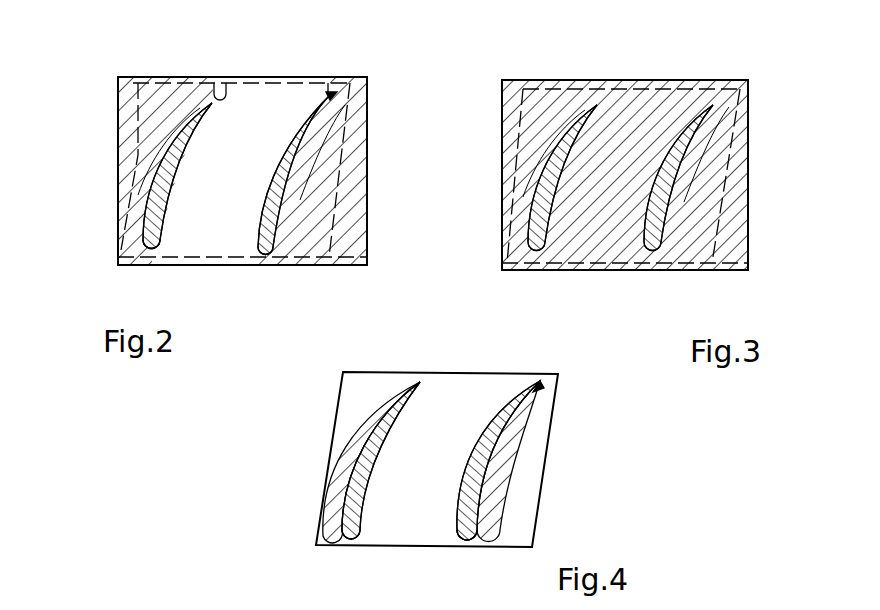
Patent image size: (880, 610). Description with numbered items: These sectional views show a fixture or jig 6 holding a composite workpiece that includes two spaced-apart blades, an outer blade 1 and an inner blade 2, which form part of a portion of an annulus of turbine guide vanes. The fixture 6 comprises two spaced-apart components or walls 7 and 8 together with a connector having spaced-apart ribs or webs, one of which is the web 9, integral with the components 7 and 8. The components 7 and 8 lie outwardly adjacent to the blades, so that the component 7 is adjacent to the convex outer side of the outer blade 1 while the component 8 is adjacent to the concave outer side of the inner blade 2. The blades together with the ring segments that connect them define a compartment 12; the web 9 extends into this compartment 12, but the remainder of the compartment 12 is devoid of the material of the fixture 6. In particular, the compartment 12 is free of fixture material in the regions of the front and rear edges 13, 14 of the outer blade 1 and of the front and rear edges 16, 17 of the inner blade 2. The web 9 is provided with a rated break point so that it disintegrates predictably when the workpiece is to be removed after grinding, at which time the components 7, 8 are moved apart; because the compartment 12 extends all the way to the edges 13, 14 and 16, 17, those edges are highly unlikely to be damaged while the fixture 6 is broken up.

In FIG. 2, the outer blade 1 is at (147, 228).
In FIG. 3, the outer blade 1 is at (551, 207).
In FIG. 4, the outer blade 1 is at (352, 508).
In FIG. 2, the inner blade 2 is at (280, 230).
In FIG. 3, the inner blade 2 is at (686, 207).
In FIG. 4, the inner blade 2 is at (472, 515).
In FIG. 2, the fixture 6 is at (127, 98).
In FIG. 2, the component 7 is at (128, 154).
In FIG. 3, the component 7 is at (525, 142).
In FIG. 4, the component 7 is at (348, 457).
In FIG. 2, the component 8 is at (367, 118).
In FIG. 3, the component 8 is at (723, 145).
In FIG. 4, the component 8 is at (517, 456).
In FIG. 3, the web 9 is at (625, 112).
In FIG. 2, the compartment 12 is at (248, 117).
In FIG. 2, the front edge 13 is at (227, 87).
In FIG. 4, the front edge 13 is at (423, 383).
In FIG. 2, the rear edge 14 is at (155, 249).
In FIG. 4, the rear edge 14 is at (352, 537).
In FIG. 2, the front edge 16 is at (328, 87).
In FIG. 4, the front edge 16 is at (529, 383).
In FIG. 2, the rear edge 17 is at (257, 252).
In FIG. 4, the rear edge 17 is at (468, 540).